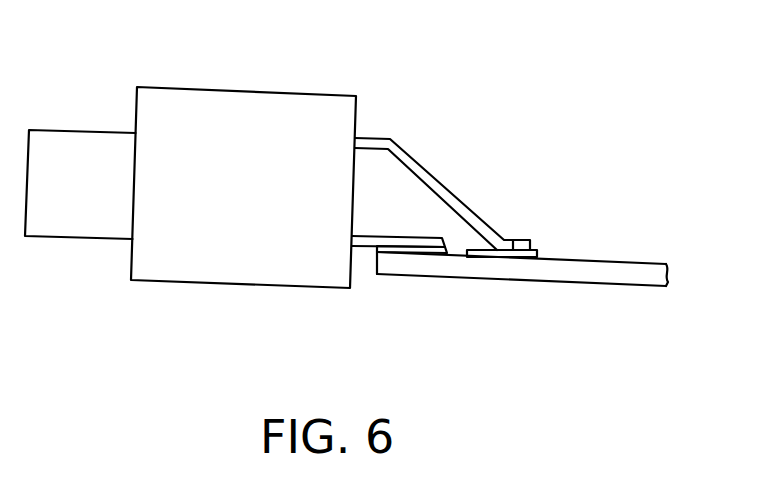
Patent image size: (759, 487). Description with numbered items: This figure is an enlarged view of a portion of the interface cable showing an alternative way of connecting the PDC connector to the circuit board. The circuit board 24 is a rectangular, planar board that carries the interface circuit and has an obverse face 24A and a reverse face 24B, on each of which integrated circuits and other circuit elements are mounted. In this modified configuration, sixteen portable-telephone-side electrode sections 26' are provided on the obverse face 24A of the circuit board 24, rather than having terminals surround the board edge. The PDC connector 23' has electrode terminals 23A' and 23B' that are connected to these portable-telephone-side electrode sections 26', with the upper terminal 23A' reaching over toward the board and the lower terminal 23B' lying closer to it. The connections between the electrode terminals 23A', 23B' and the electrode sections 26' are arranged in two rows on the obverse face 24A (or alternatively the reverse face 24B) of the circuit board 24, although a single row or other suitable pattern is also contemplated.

The PDC connector 23' is at (190, 160).
The electrode terminal 23A' is at (442, 179).
The electrode terminal 23B' is at (398, 280).
The portable-telephone-side electrode section 26' is at (460, 269).
The circuit board 24 is at (617, 270).
The obverse face 24A is at (602, 258).
The reverse face 24B is at (495, 283).